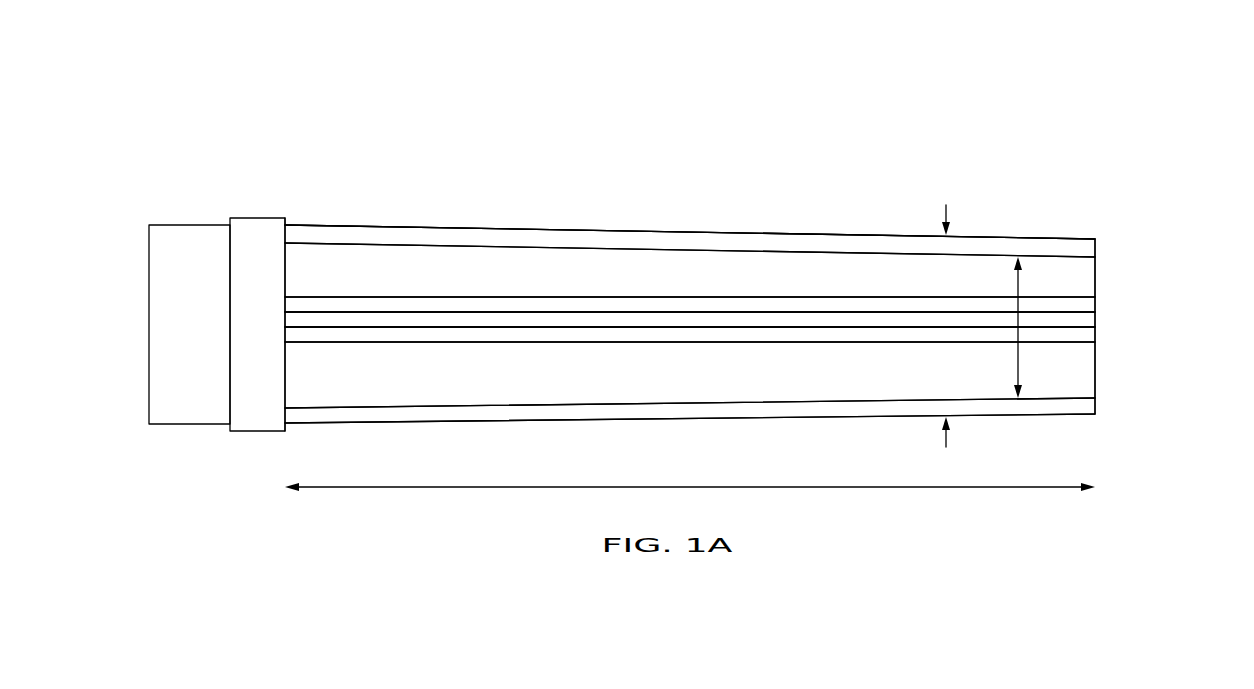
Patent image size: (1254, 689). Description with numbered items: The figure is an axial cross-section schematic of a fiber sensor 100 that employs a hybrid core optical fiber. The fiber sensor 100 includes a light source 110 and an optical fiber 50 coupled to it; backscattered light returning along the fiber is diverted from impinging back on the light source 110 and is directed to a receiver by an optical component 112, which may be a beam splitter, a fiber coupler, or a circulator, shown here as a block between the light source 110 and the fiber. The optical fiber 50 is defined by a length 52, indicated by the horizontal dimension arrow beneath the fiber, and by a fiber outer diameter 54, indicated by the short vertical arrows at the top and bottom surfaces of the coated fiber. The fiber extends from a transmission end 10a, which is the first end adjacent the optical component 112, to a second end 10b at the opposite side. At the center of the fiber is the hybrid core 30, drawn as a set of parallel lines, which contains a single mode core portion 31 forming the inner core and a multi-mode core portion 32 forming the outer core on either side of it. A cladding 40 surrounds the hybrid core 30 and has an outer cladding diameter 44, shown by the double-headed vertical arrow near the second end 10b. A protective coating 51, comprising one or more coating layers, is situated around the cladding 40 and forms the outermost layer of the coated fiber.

The fiber sensor 100 is at (1005, 103).
The light source 110 is at (173, 224).
The optical component 112 is at (258, 415).
The transmission end 10a is at (283, 267).
The second end 10b is at (1095, 263).
The cladding 40 is at (800, 282).
The optical fiber 50 is at (1008, 227).
The protective coating 51 is at (1040, 243).
The length 52 is at (1043, 487).
The fiber outer diameter 54 is at (946, 205).
The outer cladding diameter 44 is at (1020, 292).
The hybrid core 30 is at (1172, 288).
The single mode core portion 31 is at (1090, 322).
The multi-mode core portion 32 is at (1090, 304).